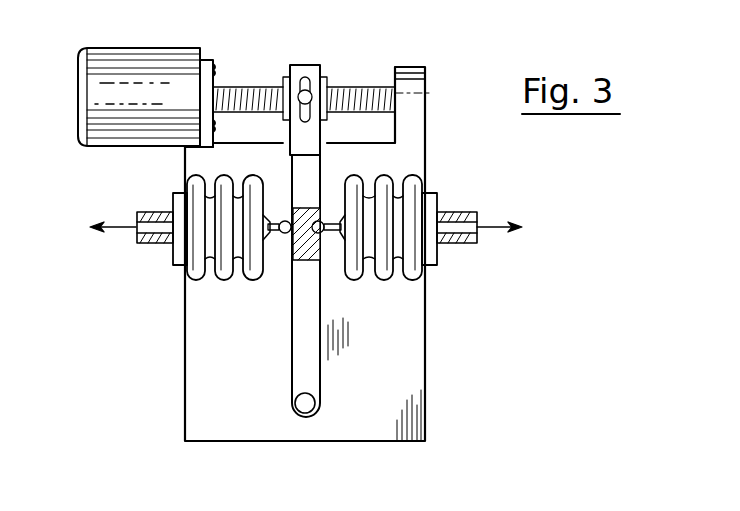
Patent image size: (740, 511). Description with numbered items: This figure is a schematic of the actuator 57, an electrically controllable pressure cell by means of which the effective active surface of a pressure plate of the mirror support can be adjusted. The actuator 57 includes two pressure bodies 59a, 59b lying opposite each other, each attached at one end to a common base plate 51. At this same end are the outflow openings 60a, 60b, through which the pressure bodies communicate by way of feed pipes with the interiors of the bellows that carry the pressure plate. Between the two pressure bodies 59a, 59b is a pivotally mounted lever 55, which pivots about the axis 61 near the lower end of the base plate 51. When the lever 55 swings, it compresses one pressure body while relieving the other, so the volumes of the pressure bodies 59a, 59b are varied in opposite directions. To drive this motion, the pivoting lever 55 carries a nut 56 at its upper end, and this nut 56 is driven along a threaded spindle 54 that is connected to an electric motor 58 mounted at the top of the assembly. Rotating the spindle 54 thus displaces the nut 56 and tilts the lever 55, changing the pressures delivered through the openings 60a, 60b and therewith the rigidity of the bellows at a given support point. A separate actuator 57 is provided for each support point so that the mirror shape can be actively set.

The base plate 51 is at (418, 374).
The threaded spindle 54 is at (370, 88).
The pivoting lever 55 is at (290, 372).
The nut 56 is at (324, 72).
The actuator 57 is at (427, 328).
The electric motor 58 is at (118, 62).
The pressure body 59a is at (190, 268).
The pressure body 59b is at (405, 266).
The outflow opening 60a is at (137, 218).
The outflow opening 60b is at (458, 213).
The axis 61 is at (305, 406).